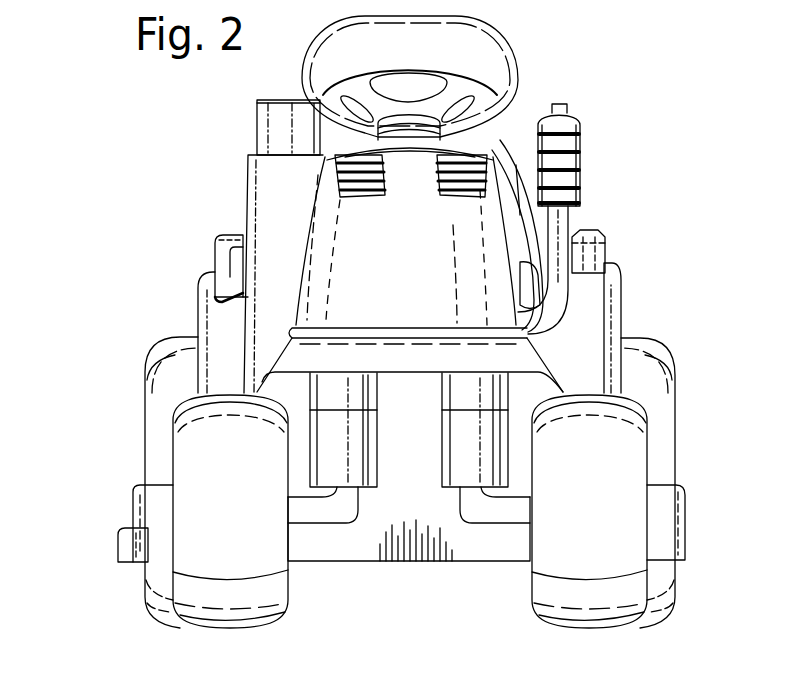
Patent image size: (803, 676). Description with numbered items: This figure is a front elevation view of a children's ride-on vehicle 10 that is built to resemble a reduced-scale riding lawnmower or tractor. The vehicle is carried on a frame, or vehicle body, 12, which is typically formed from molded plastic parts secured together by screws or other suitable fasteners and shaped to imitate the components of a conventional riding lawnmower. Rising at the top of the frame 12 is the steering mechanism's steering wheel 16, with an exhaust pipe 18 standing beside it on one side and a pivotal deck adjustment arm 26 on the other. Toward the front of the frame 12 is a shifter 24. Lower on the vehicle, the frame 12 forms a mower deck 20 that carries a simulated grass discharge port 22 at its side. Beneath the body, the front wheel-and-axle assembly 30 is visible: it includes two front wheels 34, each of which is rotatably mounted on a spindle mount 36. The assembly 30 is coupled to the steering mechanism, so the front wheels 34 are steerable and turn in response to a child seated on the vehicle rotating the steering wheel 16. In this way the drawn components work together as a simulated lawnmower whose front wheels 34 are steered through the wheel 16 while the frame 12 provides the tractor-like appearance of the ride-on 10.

The children's ride-on vehicle 10 is at (98, 209).
The frame 12 is at (196, 318).
The steering wheel 16 is at (500, 45).
The exhaust pipe 18 is at (256, 140).
The mower deck 20 is at (138, 490).
The grass discharge port 22 is at (124, 518).
The shifter 24 is at (240, 233).
The pivotal deck adjustment arm 26 is at (581, 126).
The front wheel-and-axle assembly 30 is at (399, 568).
The front wheels 34 is at (207, 523).
The spindle mounts 36 is at (364, 496).